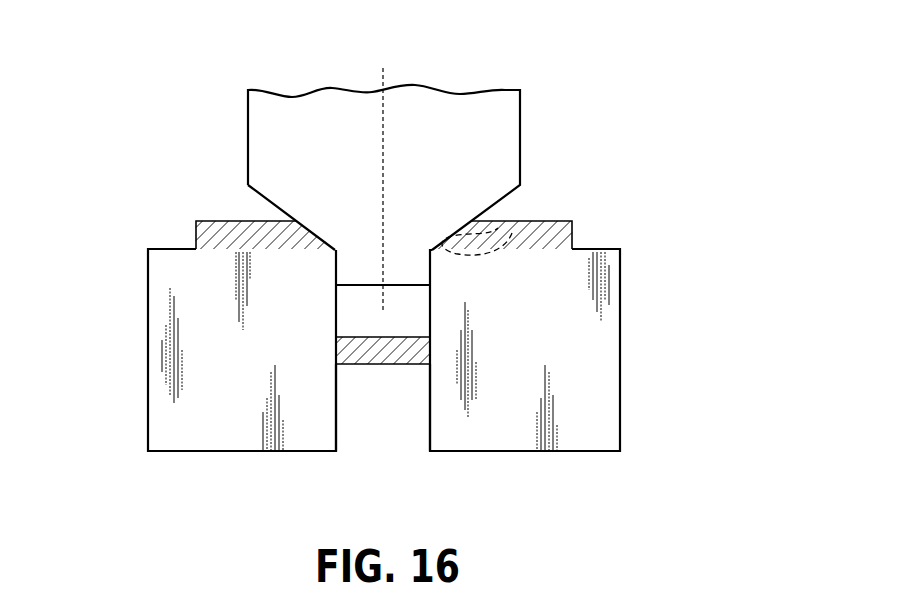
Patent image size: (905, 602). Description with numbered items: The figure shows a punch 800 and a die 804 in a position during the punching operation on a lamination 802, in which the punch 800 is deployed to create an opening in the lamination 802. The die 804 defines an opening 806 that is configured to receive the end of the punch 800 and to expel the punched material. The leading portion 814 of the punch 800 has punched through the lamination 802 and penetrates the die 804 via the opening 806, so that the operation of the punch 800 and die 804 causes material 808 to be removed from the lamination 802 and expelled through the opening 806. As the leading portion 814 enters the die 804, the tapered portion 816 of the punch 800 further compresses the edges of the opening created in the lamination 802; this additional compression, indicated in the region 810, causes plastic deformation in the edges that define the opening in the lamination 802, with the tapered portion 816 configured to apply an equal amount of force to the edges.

The punch 800 is at (520, 134).
The lamination 802 is at (572, 235).
The die 804 is at (148, 350).
The opening 806 is at (383, 400).
The material 808 is at (383, 337).
The bond region 810 is at (512, 233).
The leading portion 814 is at (432, 272).
The tapered portion 816 is at (268, 200).